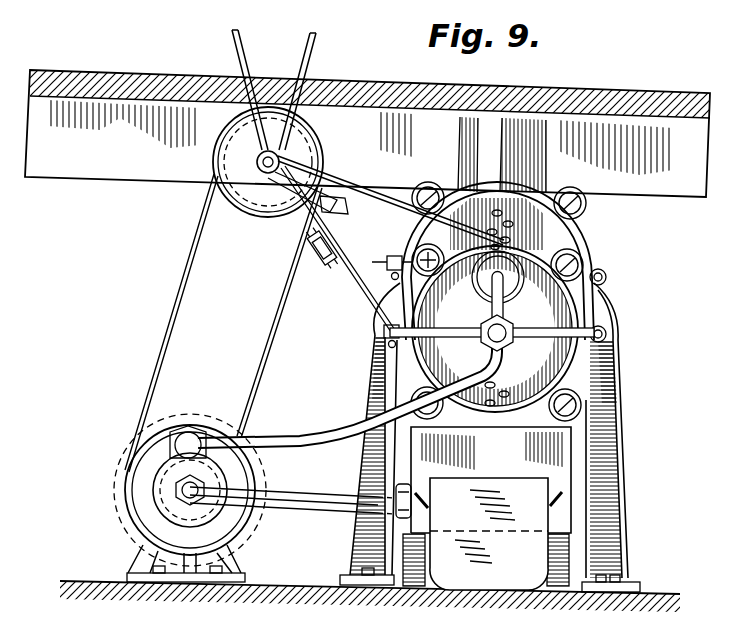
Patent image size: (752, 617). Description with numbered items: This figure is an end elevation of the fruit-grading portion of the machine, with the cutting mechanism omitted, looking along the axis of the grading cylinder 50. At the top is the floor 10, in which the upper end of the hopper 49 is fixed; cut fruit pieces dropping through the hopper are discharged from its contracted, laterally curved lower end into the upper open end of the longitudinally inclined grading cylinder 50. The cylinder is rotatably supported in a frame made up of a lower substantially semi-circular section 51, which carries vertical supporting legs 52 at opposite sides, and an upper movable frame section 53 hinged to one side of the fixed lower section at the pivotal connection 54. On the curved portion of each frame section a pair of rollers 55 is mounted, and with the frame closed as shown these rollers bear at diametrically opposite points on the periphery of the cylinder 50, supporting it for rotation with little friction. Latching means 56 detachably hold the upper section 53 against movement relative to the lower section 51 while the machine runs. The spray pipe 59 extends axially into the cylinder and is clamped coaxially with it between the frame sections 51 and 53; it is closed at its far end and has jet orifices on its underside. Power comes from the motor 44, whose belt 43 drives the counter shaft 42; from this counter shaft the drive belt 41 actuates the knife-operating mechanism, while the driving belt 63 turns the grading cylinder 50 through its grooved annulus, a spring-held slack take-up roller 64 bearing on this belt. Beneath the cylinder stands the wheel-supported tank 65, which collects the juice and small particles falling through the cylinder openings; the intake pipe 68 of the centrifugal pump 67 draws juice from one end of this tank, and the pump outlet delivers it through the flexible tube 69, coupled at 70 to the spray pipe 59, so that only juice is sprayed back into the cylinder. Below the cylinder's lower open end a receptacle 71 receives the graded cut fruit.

The floor 10 is at (135, 98).
The drive belt 41 is at (314, 64).
The counter shaft 42 is at (305, 156).
The belt 43 is at (200, 291).
The motor 44 is at (127, 510).
The hopper 49 is at (478, 133).
The grading cylinder 50 is at (482, 182).
The lower frame section 51 is at (608, 361).
The supporting legs 52 is at (622, 478).
The upper frame section 53 is at (586, 240).
The hinge connection 54 is at (607, 277).
The rollers 55 is at (434, 184).
The latching means 56 is at (393, 264).
The spray pipe 59 is at (504, 298).
The driving belt 63 is at (357, 184).
The slack take-up roller 64 is at (336, 257).
The tank 65 is at (487, 506).
The centrifugal pump 67 is at (240, 532).
The intake pipe 68 is at (313, 496).
The flexible tube 69 is at (496, 366).
The coupling 70 is at (486, 325).
The receptacle 71 is at (489, 534).